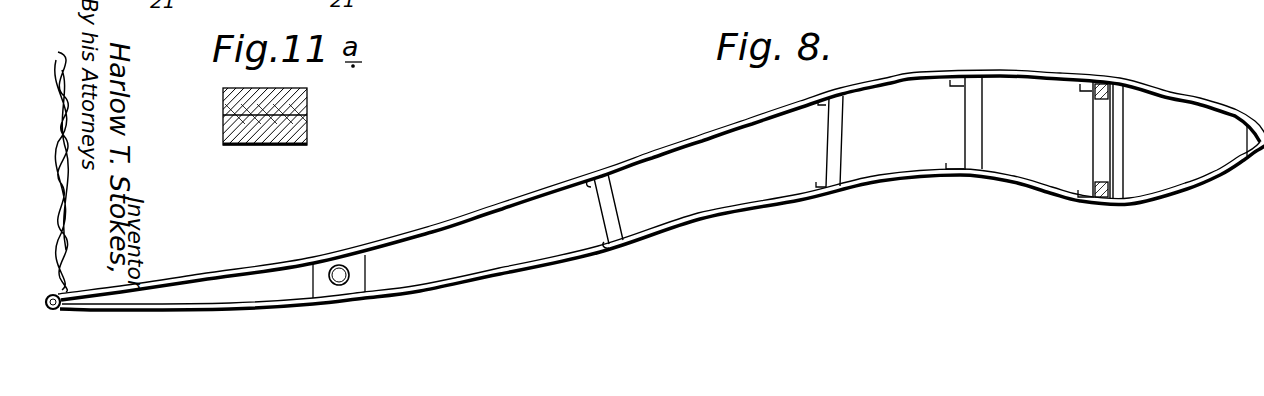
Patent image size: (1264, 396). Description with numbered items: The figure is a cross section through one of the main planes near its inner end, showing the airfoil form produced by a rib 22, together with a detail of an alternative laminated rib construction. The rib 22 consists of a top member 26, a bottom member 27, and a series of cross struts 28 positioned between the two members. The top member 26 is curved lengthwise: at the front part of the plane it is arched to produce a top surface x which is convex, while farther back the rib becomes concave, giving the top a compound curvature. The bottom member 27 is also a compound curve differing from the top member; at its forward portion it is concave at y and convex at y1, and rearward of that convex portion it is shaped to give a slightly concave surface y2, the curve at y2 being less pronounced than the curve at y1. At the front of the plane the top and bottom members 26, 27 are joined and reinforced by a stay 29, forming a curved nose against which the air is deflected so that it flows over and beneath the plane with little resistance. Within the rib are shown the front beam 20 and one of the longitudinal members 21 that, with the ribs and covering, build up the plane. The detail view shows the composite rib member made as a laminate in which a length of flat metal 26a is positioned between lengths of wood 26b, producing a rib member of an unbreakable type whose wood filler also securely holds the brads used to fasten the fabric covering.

In FIG. 8, the front beam 20 is at (1147, 137).
In FIG. 8, the longitudinal members 21 is at (55, 295).
In FIG. 8, the rib 22 is at (661, 169).
In FIG. 8, the top member 26 is at (1063, 73).
In FIG. 11A, the flat metal length 26a is at (307, 117).
In FIG. 11A, the wood lengths 26b is at (307, 96).
In FIG. 8, the bottom member 27 is at (1031, 188).
In FIG. 8, the cross struts 28 is at (1098, 135).
In FIG. 8, the stay 29 is at (1247, 138).
In FIG. 8, the convex top surface x is at (1005, 71).
In FIG. 8, the concave bottom surface y is at (1138, 200).
In FIG. 8, the convex bottom surface y1 is at (957, 180).
In FIG. 8, the slightly concave bottom surface y2 is at (611, 248).